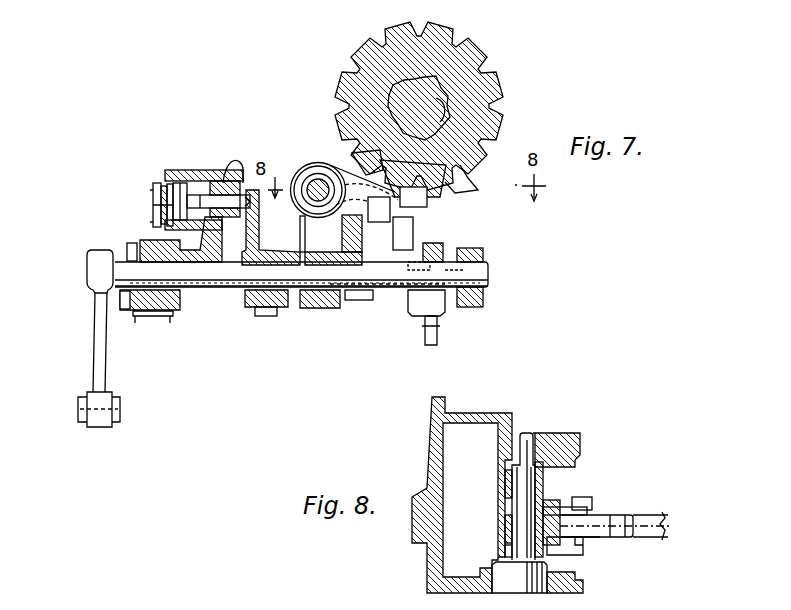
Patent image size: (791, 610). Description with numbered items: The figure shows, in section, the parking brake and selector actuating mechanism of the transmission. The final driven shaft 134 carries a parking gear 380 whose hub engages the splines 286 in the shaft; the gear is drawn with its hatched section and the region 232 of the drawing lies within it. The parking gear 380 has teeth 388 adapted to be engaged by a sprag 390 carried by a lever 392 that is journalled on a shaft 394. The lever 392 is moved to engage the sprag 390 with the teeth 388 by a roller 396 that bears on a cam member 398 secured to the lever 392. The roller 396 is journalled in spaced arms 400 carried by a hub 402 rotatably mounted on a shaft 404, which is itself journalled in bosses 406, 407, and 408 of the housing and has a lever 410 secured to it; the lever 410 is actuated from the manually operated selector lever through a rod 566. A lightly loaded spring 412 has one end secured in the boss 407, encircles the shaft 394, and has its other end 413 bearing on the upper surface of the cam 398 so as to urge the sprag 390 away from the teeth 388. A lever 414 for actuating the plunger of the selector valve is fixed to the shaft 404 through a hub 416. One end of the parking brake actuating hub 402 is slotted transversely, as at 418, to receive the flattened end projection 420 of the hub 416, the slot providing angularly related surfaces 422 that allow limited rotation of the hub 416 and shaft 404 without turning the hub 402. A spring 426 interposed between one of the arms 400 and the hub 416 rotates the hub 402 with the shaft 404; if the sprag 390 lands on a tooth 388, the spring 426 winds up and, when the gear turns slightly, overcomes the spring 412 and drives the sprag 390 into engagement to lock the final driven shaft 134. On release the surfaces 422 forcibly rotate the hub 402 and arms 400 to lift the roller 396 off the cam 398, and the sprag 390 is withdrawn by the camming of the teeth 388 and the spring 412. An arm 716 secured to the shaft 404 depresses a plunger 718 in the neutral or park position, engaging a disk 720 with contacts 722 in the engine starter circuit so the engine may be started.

In FIG. 7, the final driven shaft 134 is at (394, 115).
In FIG. 7, the gear hatching 232 is at (358, 70).
In FIG. 7, the splines 286 is at (440, 122).
In FIG. 7, the parking gear 380 is at (503, 85).
In FIG. 8, the parking gear 380 is at (660, 512).
In FIG. 7, the teeth 388 is at (484, 190).
In FIG. 7, the sprag 390 is at (424, 172).
In FIG. 8, the sprag 390 is at (620, 520).
In FIG. 7, the lever 392 is at (430, 200).
In FIG. 8, the lever 392 is at (596, 543).
In FIG. 7, the shaft 394 is at (318, 180).
In FIG. 8, the shaft 394 is at (522, 443).
In FIG. 7, the roller 396 is at (413, 226).
In FIG. 7, the cam member 398 is at (382, 222).
In FIG. 8, the cam member 398 is at (592, 499).
In FIG. 7, the spaced arms 400 is at (345, 236).
In FIG. 7, the hub 402 is at (322, 308).
In FIG. 7, the shaft 404 is at (203, 287).
In FIG. 7, the boss 406 is at (174, 316).
In FIG. 7, the boss 407 is at (288, 305).
In FIG. 7, the boss 408 is at (483, 305).
In FIG. 7, the lever 410 is at (93, 336).
In FIG. 7, the spring 412 is at (300, 240).
In FIG. 8, the spring 412 is at (498, 505).
In FIG. 7, the end 413 is at (392, 160).
In FIG. 7, the lever 414 is at (437, 336).
In FIG. 8, the lever 414 is at (560, 507).
In FIG. 7, the hub 416 is at (412, 314).
In FIG. 7, the slotted end 418 is at (378, 281).
In FIG. 7, the flattened end projection 420 is at (362, 300).
In FIG. 7, the angularly related surfaces 422 is at (406, 266).
In FIG. 7, the spring 426 is at (430, 271).
In FIG. 7, the rod 566 is at (85, 395).
In FIG. 7, the arm 716 is at (259, 204).
In FIG. 7, the plunger 718 is at (222, 226).
In FIG. 7, the disk 720 is at (188, 180).
In FIG. 7, the contacts 722 is at (170, 178).